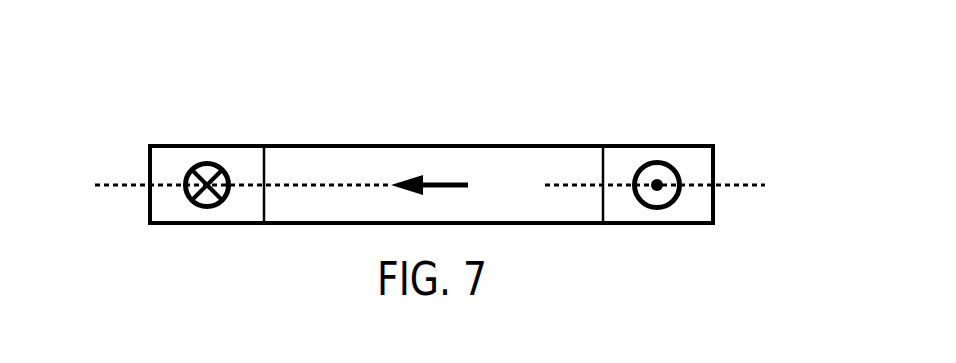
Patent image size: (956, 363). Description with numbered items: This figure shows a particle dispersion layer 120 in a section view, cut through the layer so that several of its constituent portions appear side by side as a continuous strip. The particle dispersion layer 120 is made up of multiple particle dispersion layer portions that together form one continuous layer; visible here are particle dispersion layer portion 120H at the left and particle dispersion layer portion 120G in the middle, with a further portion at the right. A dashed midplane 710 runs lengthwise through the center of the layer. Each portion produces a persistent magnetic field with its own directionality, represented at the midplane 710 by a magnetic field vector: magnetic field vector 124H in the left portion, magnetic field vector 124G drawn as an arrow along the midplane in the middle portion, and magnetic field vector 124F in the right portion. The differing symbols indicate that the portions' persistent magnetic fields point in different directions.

The particle dispersion layer 120 is at (718, 102).
The particle dispersion layer portion 120H is at (165, 163).
The particle dispersion layer portion 120G is at (336, 205).
The midplane 710 is at (435, 185).
The magnetic field vector 124H is at (198, 205).
The magnetic field vector 124F is at (650, 205).
The magnetic field vector 124G is at (462, 185).